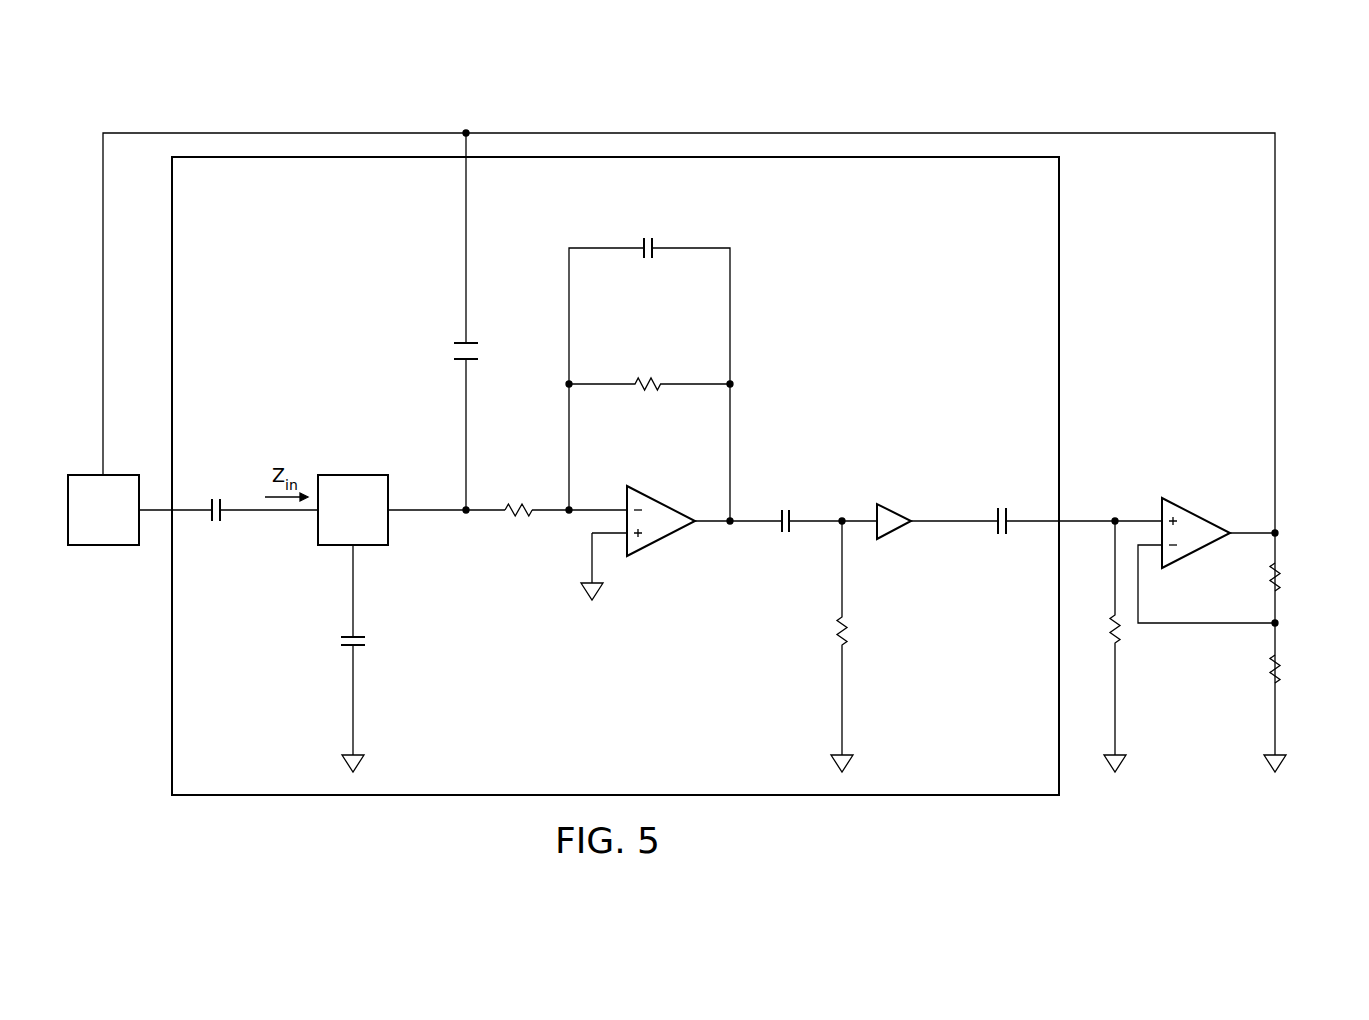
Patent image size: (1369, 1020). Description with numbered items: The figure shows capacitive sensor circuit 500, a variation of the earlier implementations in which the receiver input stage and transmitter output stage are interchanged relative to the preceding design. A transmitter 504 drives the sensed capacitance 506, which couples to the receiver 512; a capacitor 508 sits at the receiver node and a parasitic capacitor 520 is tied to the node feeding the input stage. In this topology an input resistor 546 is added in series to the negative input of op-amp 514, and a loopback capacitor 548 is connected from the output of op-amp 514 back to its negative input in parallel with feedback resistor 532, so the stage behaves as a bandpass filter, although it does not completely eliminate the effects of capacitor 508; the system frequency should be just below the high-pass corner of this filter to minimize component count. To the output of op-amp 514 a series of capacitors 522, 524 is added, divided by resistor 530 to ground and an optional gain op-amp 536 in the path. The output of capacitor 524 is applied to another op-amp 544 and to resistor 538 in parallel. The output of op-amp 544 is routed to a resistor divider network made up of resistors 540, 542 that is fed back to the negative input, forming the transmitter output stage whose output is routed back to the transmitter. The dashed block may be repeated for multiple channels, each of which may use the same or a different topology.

The circuit 500 is at (404, 73).
The transmitter 504 is at (84, 475).
The sensing capacitor Cx 506 is at (216, 522).
The receiver 512 is at (343, 475).
The capacitor C0 508 is at (340, 641).
The parasitic capacitor Cp 520 is at (480, 352).
The input resistor 546 is at (511, 518).
The op-amp 514 is at (662, 503).
The loopback capacitor 548 is at (650, 260).
The feedback resistor 532 is at (650, 390).
The capacitor 522 is at (789, 534).
The resistor 530 is at (849, 632).
The optional gain op-amp 536 is at (895, 512).
The capacitor 524 is at (1004, 535).
The op-amp 544 is at (1222, 496).
The resistor 538 is at (1121, 632).
The resistor 540 is at (1281, 580).
The resistor 542 is at (1281, 672).